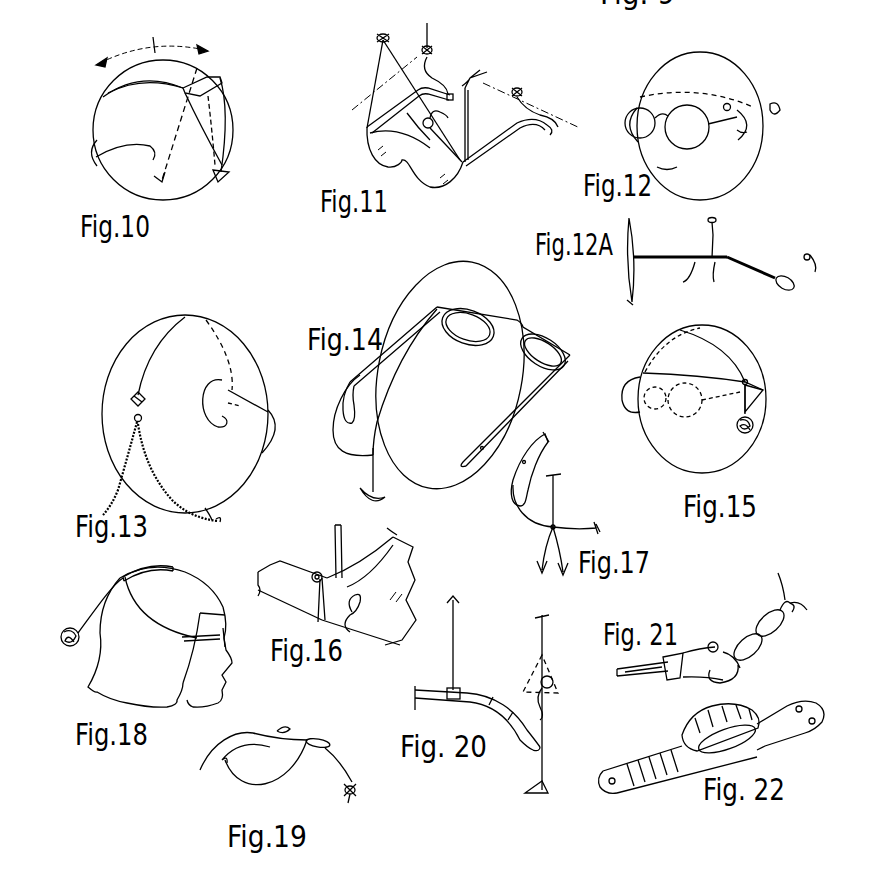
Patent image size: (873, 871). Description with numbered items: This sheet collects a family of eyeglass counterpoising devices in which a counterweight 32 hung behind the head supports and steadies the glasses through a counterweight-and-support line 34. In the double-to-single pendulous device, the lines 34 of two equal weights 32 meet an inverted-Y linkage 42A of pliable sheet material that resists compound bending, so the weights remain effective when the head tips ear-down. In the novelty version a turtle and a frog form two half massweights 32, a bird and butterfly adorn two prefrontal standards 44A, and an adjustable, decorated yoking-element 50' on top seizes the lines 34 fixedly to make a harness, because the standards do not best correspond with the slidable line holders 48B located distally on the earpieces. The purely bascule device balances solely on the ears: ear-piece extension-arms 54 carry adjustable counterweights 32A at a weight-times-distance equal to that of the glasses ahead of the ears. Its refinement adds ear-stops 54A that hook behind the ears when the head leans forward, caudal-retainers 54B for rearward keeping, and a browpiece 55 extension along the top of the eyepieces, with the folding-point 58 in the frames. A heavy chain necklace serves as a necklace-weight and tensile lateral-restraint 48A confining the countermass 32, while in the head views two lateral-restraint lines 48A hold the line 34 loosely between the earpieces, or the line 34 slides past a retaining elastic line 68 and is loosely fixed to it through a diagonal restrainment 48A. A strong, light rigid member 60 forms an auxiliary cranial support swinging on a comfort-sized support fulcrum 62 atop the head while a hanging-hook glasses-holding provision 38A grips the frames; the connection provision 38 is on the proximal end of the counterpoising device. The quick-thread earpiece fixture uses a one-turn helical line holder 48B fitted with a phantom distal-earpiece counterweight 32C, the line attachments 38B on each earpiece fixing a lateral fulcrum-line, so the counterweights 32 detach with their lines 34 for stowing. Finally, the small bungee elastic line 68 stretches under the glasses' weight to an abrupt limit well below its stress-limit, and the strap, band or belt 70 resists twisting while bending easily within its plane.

In FIG. 10, the counterweight 32 is at (228, 172).
In FIG. 11, the counterweight 32 is at (515, 90).
In FIG. 13, the counterweight 32 is at (122, 442).
In FIG. 14, the counterweight 32 is at (358, 496).
In FIG. 15, the counterweight 32 is at (750, 433).
In FIG. 17, the counterweight 32 is at (535, 575).
In FIG. 18, the counterweight 32 is at (72, 625).
In FIG. 19, the counterweight 32 is at (355, 797).
In FIG. 20, the counterweight 32 is at (533, 787).
In FIG. 12, the adjustable counterweight 32A is at (757, 88).
In FIG. 12A, the adjustable counterweight 32A is at (793, 290).
In FIG. 20, the distal-earpiece counterweight 32C is at (555, 678).
In FIG. 10, the counterweight and support line 34 is at (150, 76).
In FIG. 11, the counterweight and support line 34 is at (368, 140).
In FIG. 13, the counterweight and support line 34 is at (136, 367).
In FIG. 14, the counterweight and support line 34 is at (410, 305).
In FIG. 15, the counterweight and support line 34 is at (735, 348).
In FIG. 17, the counterweight and support line 34 is at (562, 497).
In FIG. 20, the counterweight and support line 34 is at (537, 648).
In FIG. 19, the connection provision 38 is at (225, 763).
In FIG. 16, the glasses-holding provision 38A is at (280, 592).
In FIG. 18, the glasses-holding provision 38A is at (225, 632).
In FIG. 20, the earpiece line attachment 38B is at (452, 688).
In FIG. 10, the inverted-Y linkage 42A is at (213, 78).
In FIG. 11, the prefrontal standard 44A is at (375, 90).
In FIG. 13, the tensile lateral-restraint line 48A is at (118, 474).
In FIG. 14, the tensile lateral-restraint line 48A is at (410, 495).
In FIG. 15, the tensile lateral-restraint line 48A is at (765, 392).
In FIG. 11, the slidable line holder 48B is at (550, 133).
In FIG. 20, the slidable line holder 48B is at (546, 707).
In FIG. 11, the yoking-element 50' is at (478, 150).
In FIG. 12, the ear-piece extension-arm 54 is at (757, 118).
In FIG. 12A, the ear-piece extension-arm 54 is at (742, 264).
In FIG. 12A, the ear-stop 54A is at (727, 290).
In FIG. 12A, the caudal-retainer 54B is at (806, 254).
In FIG. 12A, the browpiece extension 55 is at (637, 230).
In FIG. 12A, the folding-point 58 is at (680, 283).
In FIG. 16, the rigid framework member 60 is at (330, 547).
In FIG. 18, the rigid framework member 60 is at (102, 588).
In FIG. 19, the rigid framework member 60 is at (308, 768).
In FIG. 18, the support fulcrum 62 is at (172, 567).
In FIG. 19, the support fulcrum 62 is at (287, 727).
In FIG. 15, the elastic line 68 is at (758, 378).
In FIG. 21, the elastic line 68 is at (743, 633).
In FIG. 22, the strap, band or belt 70 is at (682, 733).